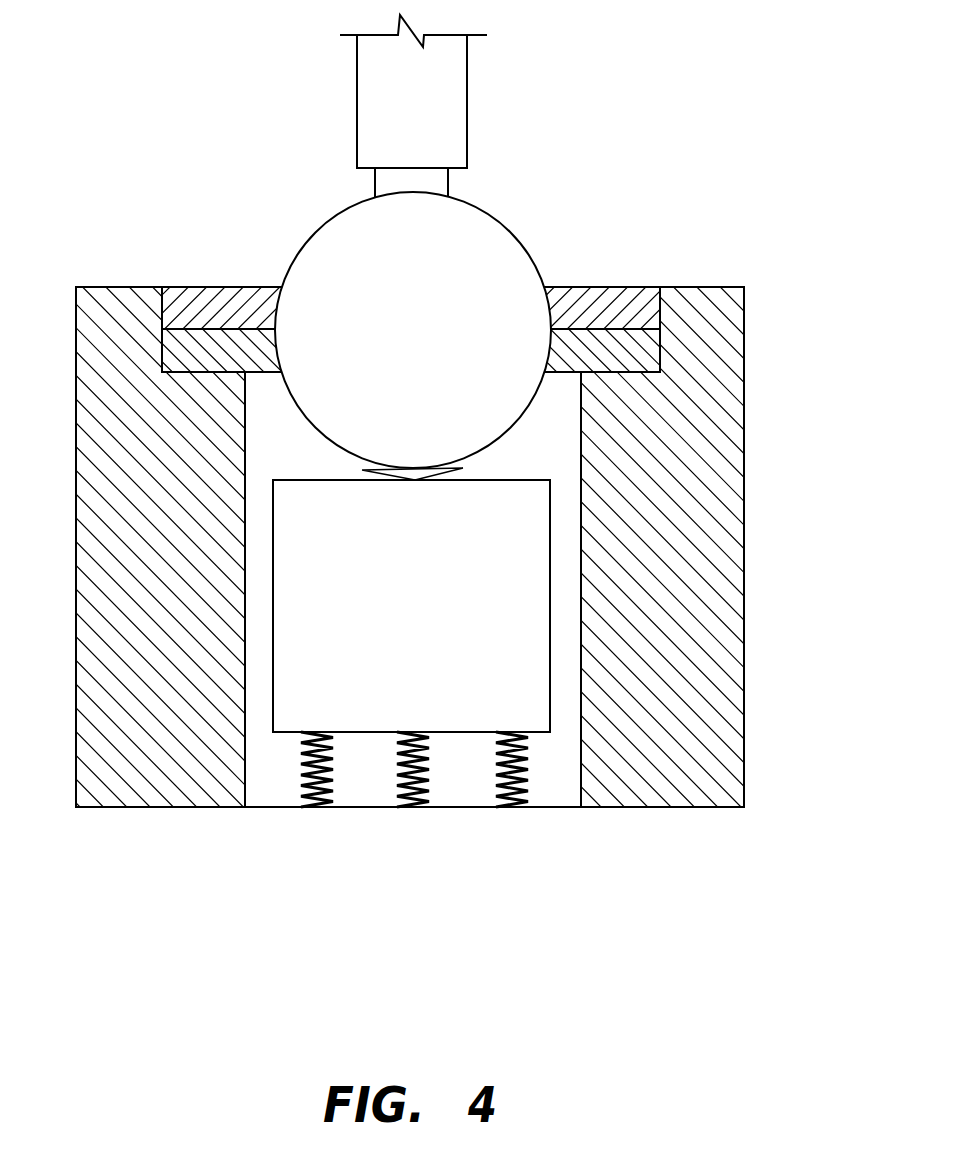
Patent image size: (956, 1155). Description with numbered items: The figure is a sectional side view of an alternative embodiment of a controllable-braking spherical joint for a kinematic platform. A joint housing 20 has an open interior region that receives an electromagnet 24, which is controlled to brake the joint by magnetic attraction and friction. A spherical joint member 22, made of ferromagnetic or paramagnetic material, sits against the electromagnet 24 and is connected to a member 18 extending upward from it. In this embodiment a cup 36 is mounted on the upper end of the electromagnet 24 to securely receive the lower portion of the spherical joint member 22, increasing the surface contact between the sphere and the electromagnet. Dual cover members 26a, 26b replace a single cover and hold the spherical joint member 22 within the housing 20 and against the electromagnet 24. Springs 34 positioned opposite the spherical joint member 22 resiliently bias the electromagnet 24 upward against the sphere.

The shaft / actuator member 18 is at (467, 128).
The joint housing 20 is at (100, 287).
The spherical joint member 22 is at (308, 232).
The electromagnet 24 is at (550, 638).
The cover member 26a is at (639, 287).
The cover member 26b is at (660, 354).
The springs 34 is at (495, 778).
The cup 36 is at (463, 468).